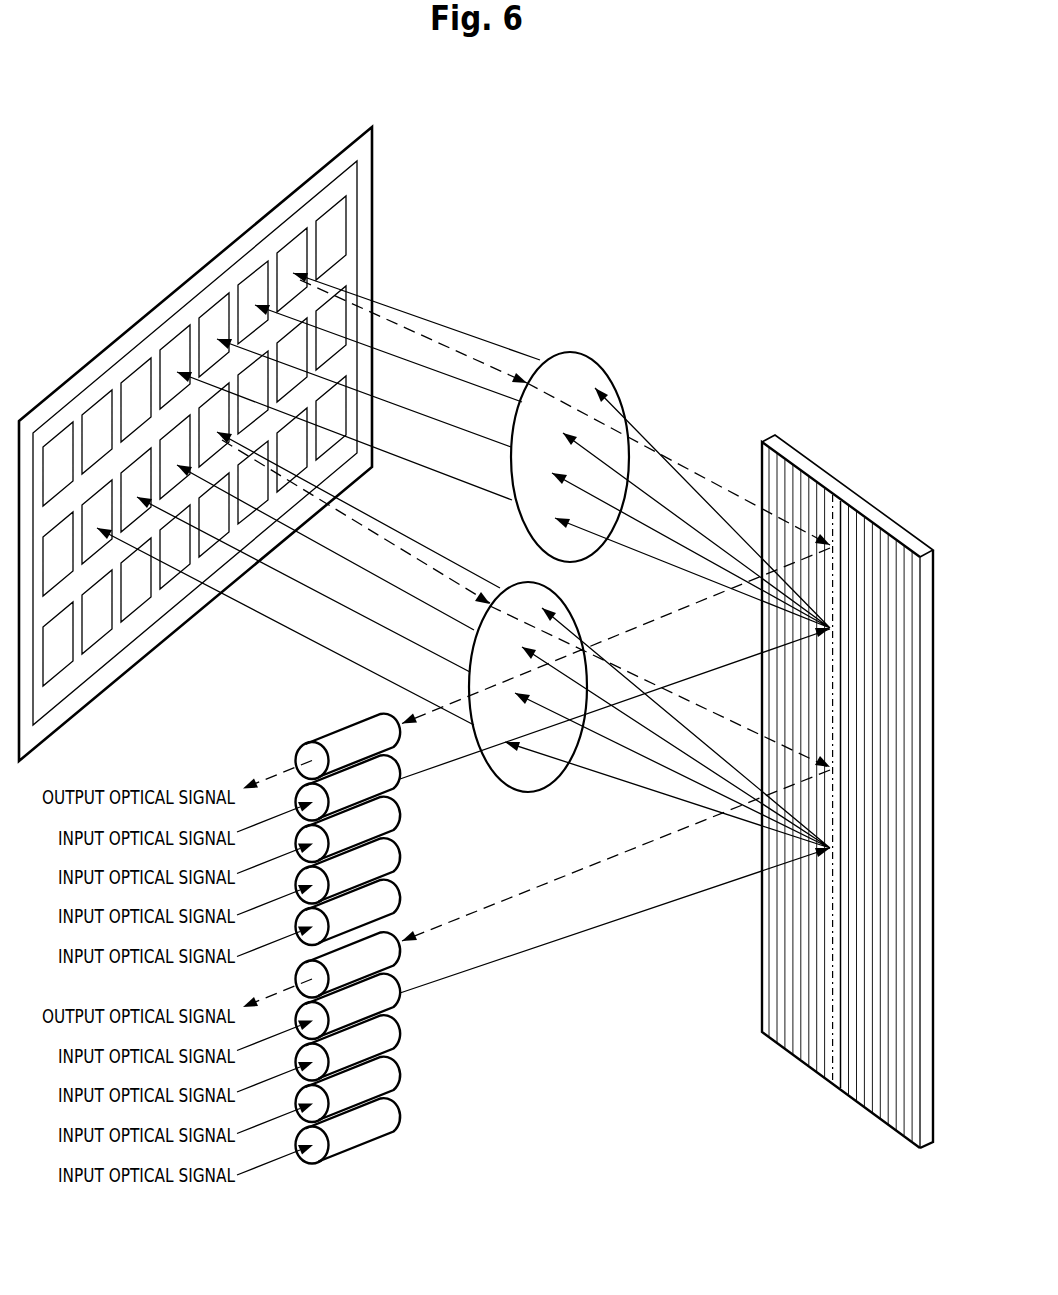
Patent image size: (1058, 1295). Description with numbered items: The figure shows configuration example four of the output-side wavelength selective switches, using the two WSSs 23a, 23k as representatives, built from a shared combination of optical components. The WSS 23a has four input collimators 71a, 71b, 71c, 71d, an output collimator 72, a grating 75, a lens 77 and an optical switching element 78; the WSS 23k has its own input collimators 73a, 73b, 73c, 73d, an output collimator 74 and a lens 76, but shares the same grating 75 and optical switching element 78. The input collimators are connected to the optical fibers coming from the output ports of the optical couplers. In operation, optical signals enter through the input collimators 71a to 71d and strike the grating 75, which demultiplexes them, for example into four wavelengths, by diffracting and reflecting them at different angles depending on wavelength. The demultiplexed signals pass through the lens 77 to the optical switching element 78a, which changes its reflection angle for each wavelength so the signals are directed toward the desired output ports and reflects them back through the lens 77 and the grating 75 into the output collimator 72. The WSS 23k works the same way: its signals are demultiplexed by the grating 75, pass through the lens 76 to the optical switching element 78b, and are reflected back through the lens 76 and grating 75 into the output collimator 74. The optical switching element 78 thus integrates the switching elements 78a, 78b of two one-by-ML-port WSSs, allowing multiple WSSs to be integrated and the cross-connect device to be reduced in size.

The WSS 23a is at (668, 214).
The WSS 23k is at (674, 166).
The output collimator 72 is at (340, 725).
The collimator for input 71a is at (399, 756).
The collimator for input 71b is at (399, 812).
The collimator for input 71c is at (399, 849).
The collimator for input 71d is at (399, 887).
The output collimator 74 is at (399, 953).
The collimator for input 73a is at (399, 973).
The collimator for input 73b is at (399, 1028).
The collimator for input 73c is at (399, 1065).
The collimator for input 73d is at (399, 1106).
The grating 75 is at (833, 475).
The lens 76 is at (552, 588).
The lens 77 is at (607, 352).
The optical switching element 78 is at (220, 252).
The optical switching element 78a is at (347, 223).
The optical switching element 78b is at (347, 327).